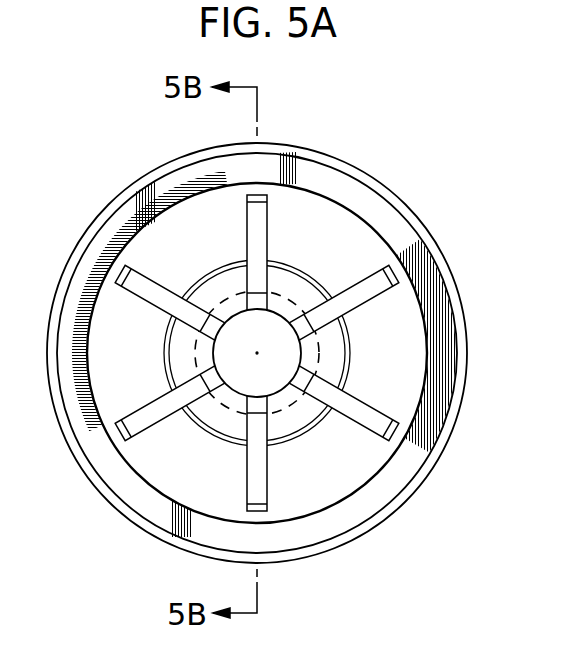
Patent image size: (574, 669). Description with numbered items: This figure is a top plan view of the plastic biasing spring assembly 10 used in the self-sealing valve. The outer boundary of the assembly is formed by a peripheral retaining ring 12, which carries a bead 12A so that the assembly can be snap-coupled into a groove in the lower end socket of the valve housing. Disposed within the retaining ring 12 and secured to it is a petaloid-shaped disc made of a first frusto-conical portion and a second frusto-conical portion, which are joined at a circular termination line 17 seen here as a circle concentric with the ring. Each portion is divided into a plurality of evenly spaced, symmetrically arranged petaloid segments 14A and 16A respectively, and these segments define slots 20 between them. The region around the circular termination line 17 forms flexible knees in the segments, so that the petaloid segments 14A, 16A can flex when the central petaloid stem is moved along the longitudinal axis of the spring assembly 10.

The spring assembly 10 is at (108, 183).
The peripheral retaining ring 12 is at (406, 232).
The bead 12A is at (339, 158).
The petaloid segments 14A is at (215, 480).
The petaloid segments 16A is at (176, 383).
The circular termination line 17 is at (337, 360).
The slots 20 is at (267, 259).